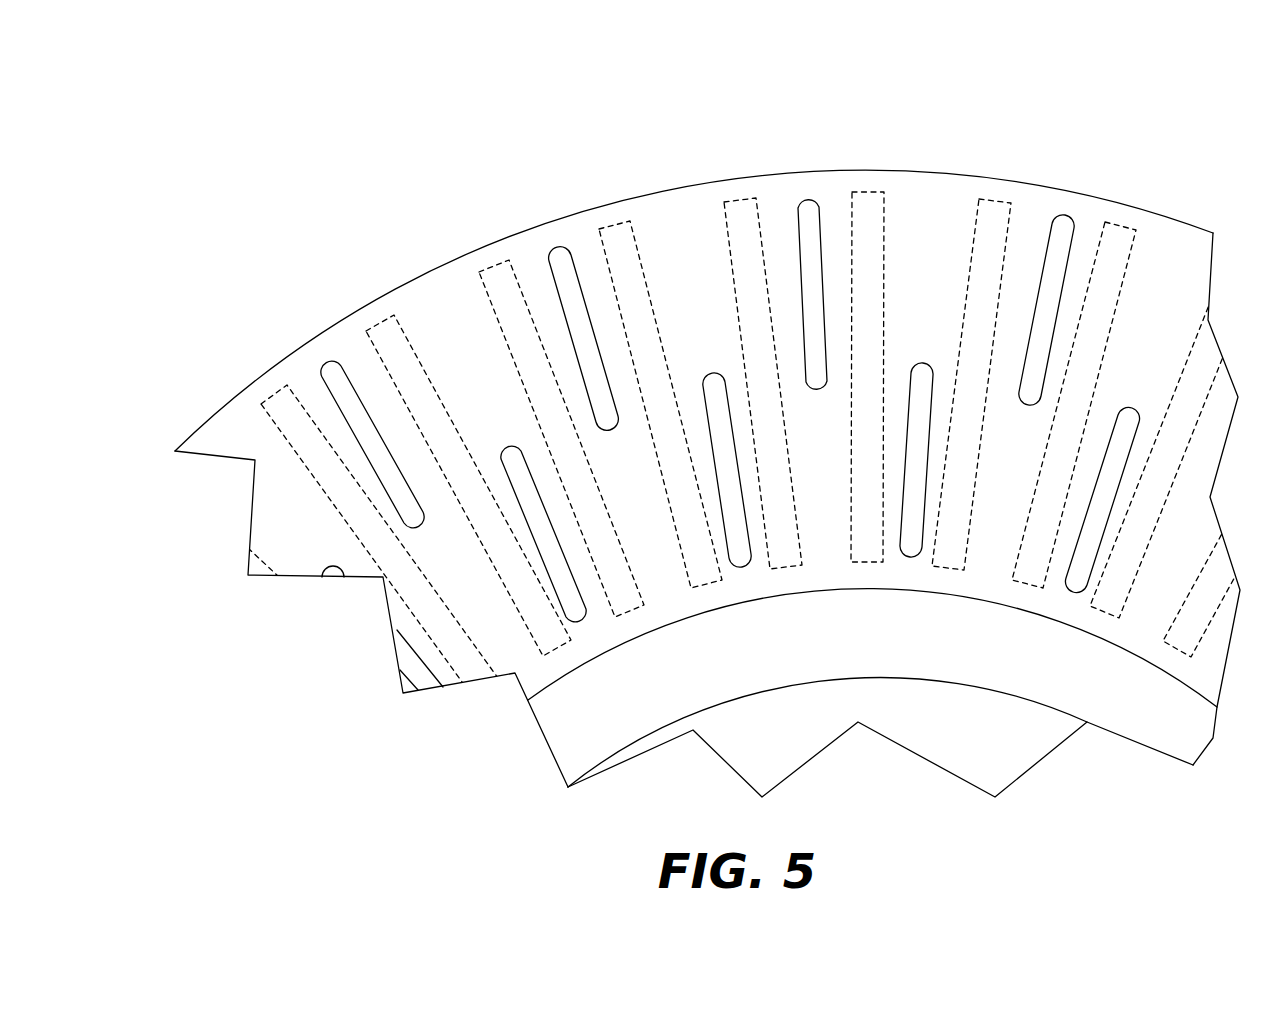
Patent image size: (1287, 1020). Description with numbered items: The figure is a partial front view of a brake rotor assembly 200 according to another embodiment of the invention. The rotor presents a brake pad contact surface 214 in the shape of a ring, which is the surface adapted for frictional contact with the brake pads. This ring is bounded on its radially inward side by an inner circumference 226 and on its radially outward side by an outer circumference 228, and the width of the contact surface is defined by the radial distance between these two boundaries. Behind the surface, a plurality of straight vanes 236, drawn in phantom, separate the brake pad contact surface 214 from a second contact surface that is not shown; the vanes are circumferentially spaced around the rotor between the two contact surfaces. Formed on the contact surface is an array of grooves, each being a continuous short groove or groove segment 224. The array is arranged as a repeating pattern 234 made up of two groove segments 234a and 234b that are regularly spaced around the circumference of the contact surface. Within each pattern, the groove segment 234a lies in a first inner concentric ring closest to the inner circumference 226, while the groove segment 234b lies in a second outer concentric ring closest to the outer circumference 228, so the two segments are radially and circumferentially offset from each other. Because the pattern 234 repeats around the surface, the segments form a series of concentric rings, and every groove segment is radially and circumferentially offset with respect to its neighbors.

The brake rotor assembly 200 is at (1087, 141).
The brake pad contact surface 214 is at (1180, 247).
The groove segment 224 is at (1069, 216).
The inner circumference 226 is at (736, 607).
The outer circumference 228 is at (707, 183).
The repeating pattern 234 is at (403, 158).
The groove segment 234a is at (499, 449).
The groove segment 234b is at (556, 247).
The straight vanes 236 is at (993, 200).